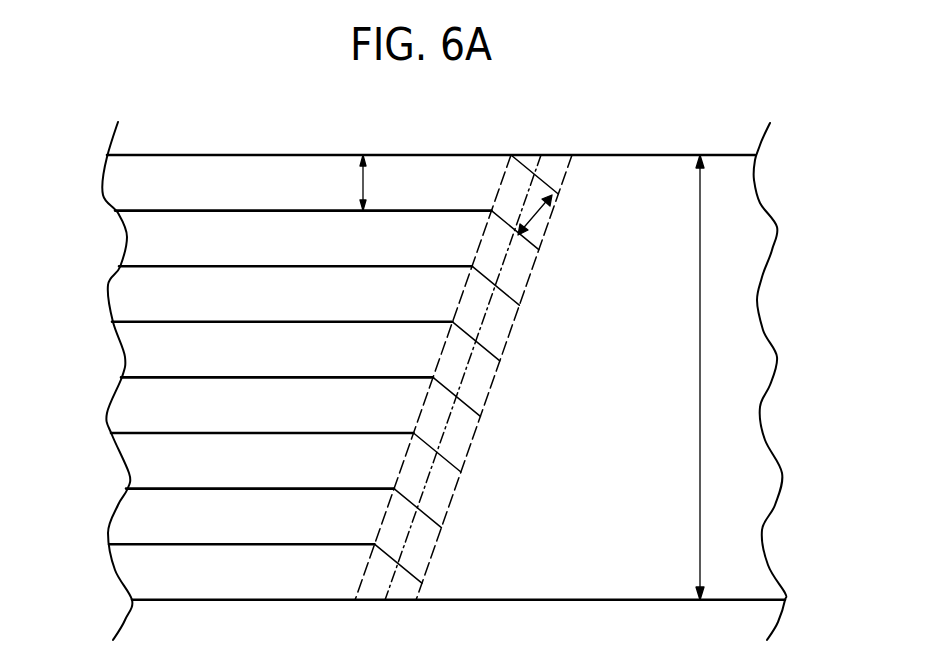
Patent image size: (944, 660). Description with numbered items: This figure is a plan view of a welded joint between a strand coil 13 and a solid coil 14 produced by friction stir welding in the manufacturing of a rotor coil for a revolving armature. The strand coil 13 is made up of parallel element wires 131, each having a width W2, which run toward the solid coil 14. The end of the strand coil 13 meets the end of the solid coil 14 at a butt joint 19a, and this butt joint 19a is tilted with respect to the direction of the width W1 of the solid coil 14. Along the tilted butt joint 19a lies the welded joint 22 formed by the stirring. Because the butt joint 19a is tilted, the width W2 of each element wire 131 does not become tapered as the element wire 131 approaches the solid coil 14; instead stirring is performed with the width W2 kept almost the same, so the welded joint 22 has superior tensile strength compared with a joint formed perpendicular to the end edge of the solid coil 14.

The strand coil 13 is at (160, 357).
The element wire 131 is at (237, 352).
The solid coil 14 is at (737, 267).
The butt joint 19a is at (535, 285).
The welded joint 22 is at (500, 325).
The width of the solid coil W1 is at (682, 377).
The width of the element wire W2 is at (597, 232).